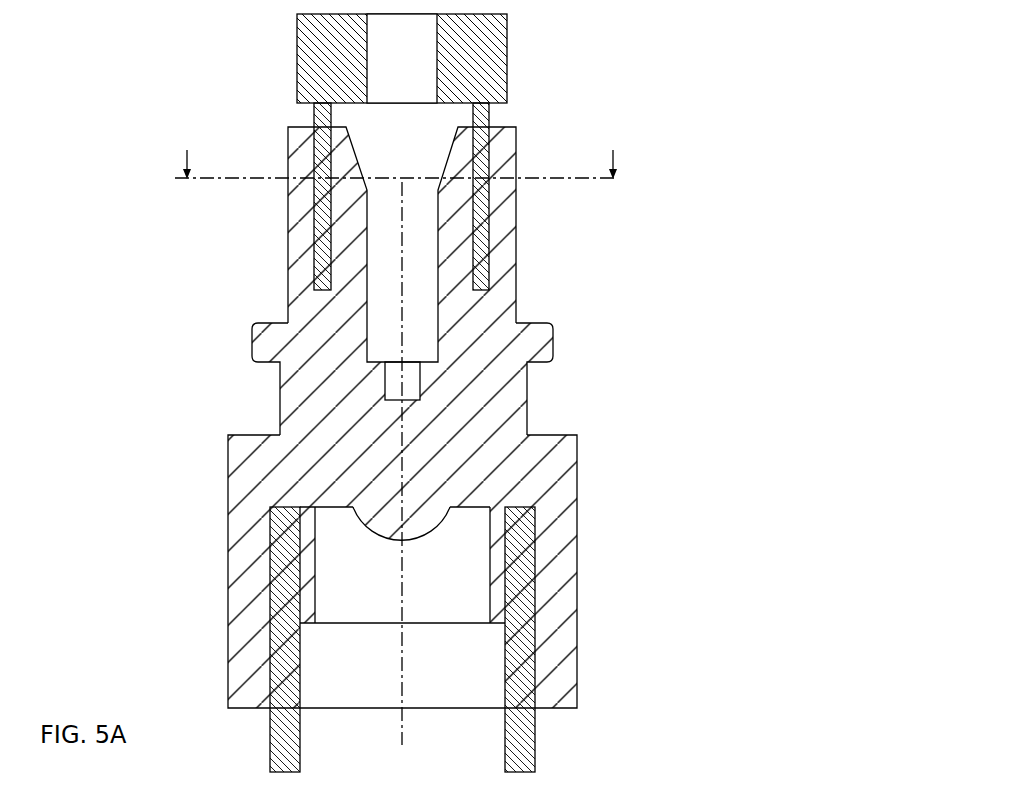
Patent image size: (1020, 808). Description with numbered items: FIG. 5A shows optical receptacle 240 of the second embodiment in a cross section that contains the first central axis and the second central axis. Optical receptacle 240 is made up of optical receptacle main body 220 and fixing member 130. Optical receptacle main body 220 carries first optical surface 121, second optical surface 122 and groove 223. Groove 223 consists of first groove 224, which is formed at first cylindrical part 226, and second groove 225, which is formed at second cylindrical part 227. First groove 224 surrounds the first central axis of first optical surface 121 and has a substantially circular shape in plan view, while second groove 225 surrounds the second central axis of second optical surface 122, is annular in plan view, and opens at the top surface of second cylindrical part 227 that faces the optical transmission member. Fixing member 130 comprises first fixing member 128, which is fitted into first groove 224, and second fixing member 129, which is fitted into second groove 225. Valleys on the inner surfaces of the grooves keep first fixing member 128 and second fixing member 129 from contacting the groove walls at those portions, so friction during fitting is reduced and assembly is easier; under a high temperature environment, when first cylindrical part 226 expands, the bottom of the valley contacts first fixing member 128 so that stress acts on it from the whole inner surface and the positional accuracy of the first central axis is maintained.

The first optical surface 121 is at (363, 528).
The second optical surface 122 is at (407, 380).
The first fixing member 128 is at (525, 512).
The second fixing member 129 is at (497, 266).
The fixing member 130 is at (653, 304).
The optical receptacle main body 220 is at (580, 684).
The groove 223 is at (130, 349).
The first groove 224 is at (268, 510).
The second groove 225 is at (313, 280).
The first cylindrical part 226 is at (553, 612).
The second cylindrical part 227 is at (503, 200).
The optical receptacle 240 is at (650, 90).